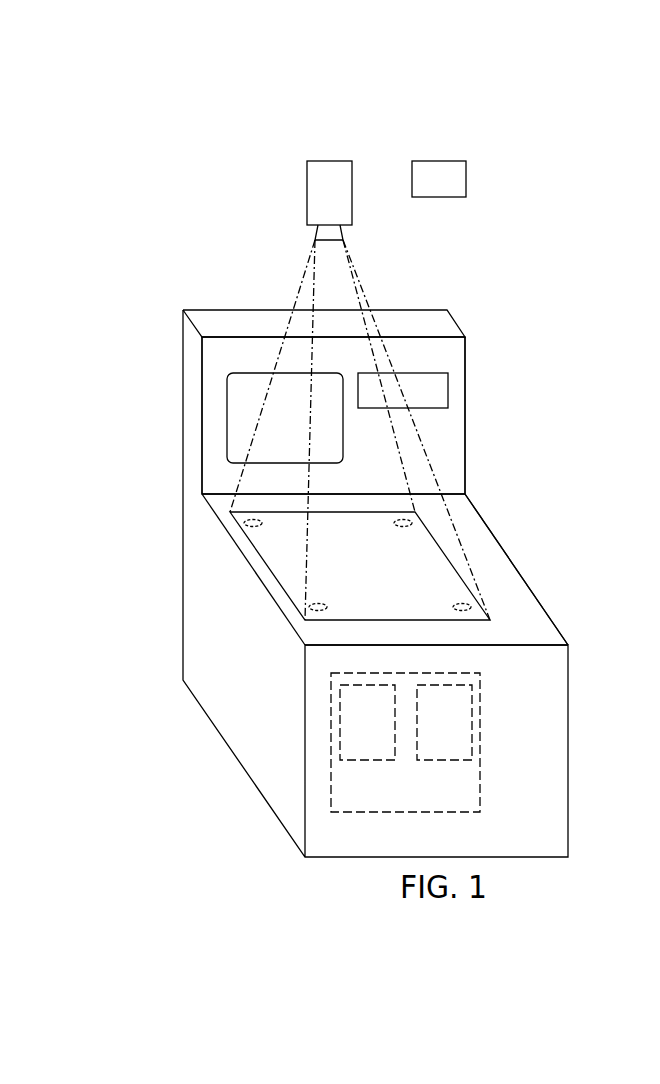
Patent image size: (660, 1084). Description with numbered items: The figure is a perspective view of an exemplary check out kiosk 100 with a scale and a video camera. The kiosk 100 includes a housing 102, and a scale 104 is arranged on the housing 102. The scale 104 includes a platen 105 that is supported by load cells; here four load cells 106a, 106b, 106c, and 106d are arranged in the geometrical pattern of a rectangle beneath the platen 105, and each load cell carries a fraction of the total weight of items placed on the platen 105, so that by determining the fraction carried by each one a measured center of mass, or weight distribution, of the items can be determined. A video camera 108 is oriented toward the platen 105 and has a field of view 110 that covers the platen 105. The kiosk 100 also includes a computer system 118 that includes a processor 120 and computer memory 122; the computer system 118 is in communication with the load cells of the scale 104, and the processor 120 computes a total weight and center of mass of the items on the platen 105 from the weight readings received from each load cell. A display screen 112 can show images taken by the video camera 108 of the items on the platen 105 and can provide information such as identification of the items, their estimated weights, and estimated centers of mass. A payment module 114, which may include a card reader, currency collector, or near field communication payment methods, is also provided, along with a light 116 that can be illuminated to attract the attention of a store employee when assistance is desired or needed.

The kiosk 100 is at (517, 304).
The housing 102 is at (498, 573).
The scale 104 is at (289, 562).
The platen 105 is at (380, 611).
The load cell 106a is at (327, 605).
The load cell 106b is at (262, 524).
The load cell 106c is at (394, 524).
The load cell 106d is at (455, 604).
The video camera 108 is at (317, 167).
The field of view 110 is at (240, 483).
The display screen 112 is at (238, 386).
The payment module 114 is at (433, 387).
The light 116 is at (458, 178).
The computer system 118 is at (382, 812).
The processor 120 is at (358, 692).
The computer memory 122 is at (442, 692).